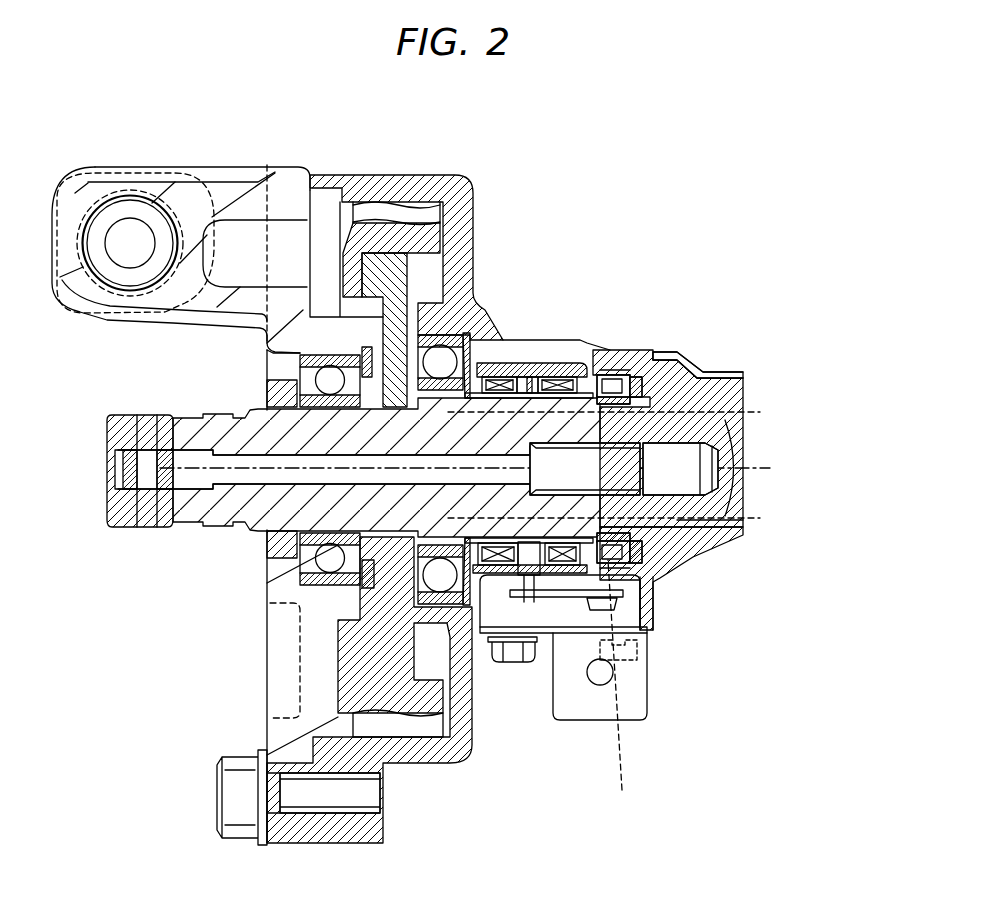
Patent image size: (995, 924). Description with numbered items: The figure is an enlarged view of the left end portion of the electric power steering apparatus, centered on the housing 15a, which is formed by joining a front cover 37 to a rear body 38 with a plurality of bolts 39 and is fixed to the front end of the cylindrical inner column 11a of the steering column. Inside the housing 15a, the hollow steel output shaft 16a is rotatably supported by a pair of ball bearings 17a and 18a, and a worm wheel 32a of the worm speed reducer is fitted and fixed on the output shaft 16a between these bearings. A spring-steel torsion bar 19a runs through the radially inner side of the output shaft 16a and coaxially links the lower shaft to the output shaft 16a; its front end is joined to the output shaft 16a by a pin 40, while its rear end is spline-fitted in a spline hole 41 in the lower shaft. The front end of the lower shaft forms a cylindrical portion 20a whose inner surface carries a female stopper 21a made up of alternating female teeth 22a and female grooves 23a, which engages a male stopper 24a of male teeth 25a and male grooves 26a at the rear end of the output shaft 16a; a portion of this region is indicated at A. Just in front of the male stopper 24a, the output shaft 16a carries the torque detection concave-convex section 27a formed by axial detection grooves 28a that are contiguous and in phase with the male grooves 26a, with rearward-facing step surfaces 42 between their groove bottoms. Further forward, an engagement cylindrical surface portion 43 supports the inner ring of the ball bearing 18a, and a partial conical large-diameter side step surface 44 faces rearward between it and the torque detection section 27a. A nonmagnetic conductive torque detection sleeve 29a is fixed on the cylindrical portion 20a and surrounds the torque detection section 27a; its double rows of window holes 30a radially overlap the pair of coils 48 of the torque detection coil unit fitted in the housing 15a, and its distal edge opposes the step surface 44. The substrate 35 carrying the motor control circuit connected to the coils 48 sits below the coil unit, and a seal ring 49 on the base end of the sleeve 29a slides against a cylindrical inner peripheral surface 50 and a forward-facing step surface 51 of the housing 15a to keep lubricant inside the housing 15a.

The inner column 11a is at (700, 365).
The housing 15a is at (460, 190).
The output shaft 16a is at (220, 430).
The ball bearing 17a is at (330, 560).
The ball bearing 18a is at (410, 620).
The torsion bar 19a is at (230, 473).
The cylindrical portion 20a is at (613, 547).
The female stopper 21a is at (727, 490).
The female teeth 22a is at (710, 400).
The female grooves 23a is at (727, 400).
The male stopper 24a is at (667, 580).
The male teeth 25a is at (597, 353).
The male grooves 26a is at (555, 448).
The torque detection concave-convex section 27a is at (562, 365).
The detection grooves 28a is at (465, 440).
The torque detection sleeve 29a is at (492, 345).
The window holes 30a is at (560, 363).
The worm wheel 32a is at (370, 215).
The substrate 35 is at (583, 600).
The cover 37 is at (340, 693).
The body 38 is at (450, 752).
The bolts 39 is at (240, 797).
The pin 40 is at (147, 470).
The spline hole 41 is at (712, 450).
The step surfaces 42 is at (627, 683).
The engagement cylindrical surface portion 43 is at (413, 578).
The large-diameter side step surface 44 is at (480, 630).
The coils 48 is at (560, 553).
The seal ring 49 is at (607, 372).
The cylindrical inner peripheral surface 50 is at (623, 362).
The step surface 51 is at (650, 372).
The region A is at (700, 432).